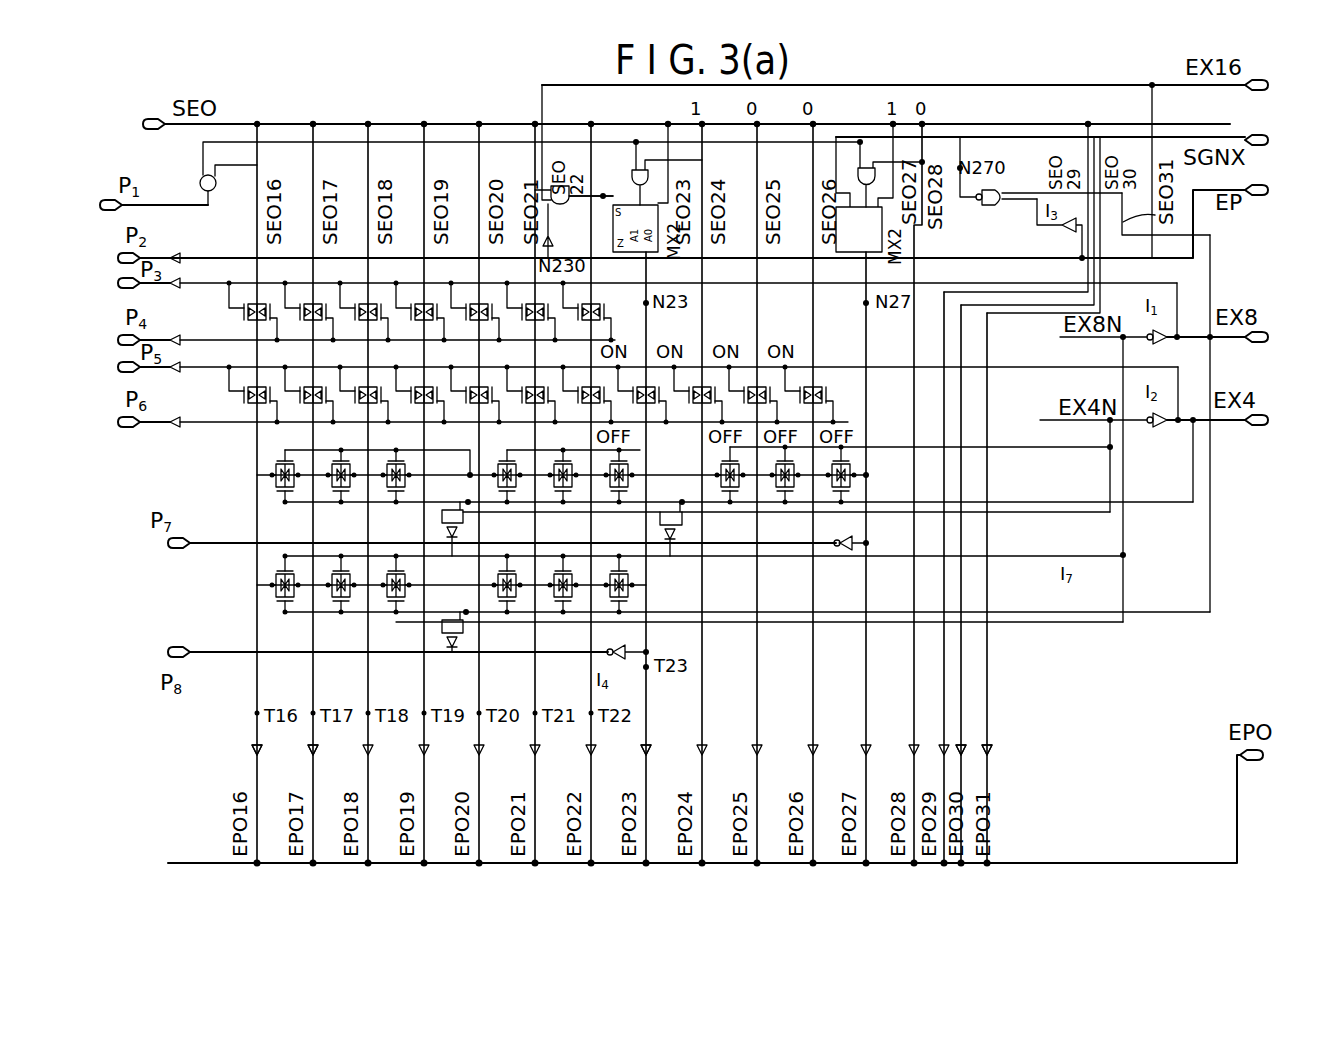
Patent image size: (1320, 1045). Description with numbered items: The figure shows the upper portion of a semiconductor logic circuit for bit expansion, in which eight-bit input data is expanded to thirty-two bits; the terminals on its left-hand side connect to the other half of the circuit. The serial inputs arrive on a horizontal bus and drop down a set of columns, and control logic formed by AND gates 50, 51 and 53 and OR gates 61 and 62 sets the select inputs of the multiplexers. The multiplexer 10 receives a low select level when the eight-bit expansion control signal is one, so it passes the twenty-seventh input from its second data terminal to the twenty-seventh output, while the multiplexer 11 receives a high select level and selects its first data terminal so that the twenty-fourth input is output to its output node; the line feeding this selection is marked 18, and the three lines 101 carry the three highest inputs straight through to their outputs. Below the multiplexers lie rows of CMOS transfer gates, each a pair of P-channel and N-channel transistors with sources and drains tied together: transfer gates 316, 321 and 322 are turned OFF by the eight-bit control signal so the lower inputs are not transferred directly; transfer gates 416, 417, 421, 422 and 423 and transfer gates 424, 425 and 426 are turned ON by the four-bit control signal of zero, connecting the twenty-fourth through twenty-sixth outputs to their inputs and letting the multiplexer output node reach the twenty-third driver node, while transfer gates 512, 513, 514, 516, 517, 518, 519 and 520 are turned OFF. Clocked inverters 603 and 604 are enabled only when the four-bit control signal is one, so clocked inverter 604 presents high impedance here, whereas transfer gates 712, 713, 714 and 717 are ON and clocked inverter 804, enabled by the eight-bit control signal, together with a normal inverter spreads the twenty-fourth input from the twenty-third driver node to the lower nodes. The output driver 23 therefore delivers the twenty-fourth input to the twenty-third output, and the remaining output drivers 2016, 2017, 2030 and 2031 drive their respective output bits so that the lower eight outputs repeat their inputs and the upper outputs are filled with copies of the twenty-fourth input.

The AND gate 53 is at (203, 178).
The AND gate 50 is at (636, 158).
The AND gate 51 is at (858, 158).
The signal lines 101 is at (1030, 204).
The OR gate 61 is at (574, 161).
The inverter 18 is at (543, 228).
The multiplexer 10 is at (836, 233).
The OR gate 62 is at (997, 206).
The multiplexer 11 is at (603, 200).
The CMOS transfer gate 316 is at (244, 316).
The CMOS transfer gate 321 is at (488, 322).
The CMOS transfer gate 322 is at (546, 322).
The CMOS transfer gate 416 is at (244, 399).
The CMOS transfer gate 417 is at (276, 412).
The CMOS transfer gate 421 is at (478, 406).
The CMOS transfer gate 422 is at (534, 406).
The CMOS transfer gate 423 is at (590, 406).
The CMOS transfer gate 424 is at (650, 406).
The CMOS transfer gate 425 is at (704, 385).
The CMOS transfer gate 426 is at (818, 385).
The CMOS transfer gate 512 is at (270, 490).
The CMOS transfer gate 513 is at (326, 490).
The CMOS transfer gate 514 is at (382, 490).
The CMOS transfer gate 516 is at (546, 490).
The CMOS transfer gate 517 is at (602, 490).
The CMOS transfer gate 518 is at (714, 490).
The CMOS transfer gate 519 is at (772, 490).
The CMOS transfer gate 520 is at (840, 495).
The clocked inverter 603 is at (446, 535).
The clocked inverter 604 is at (664, 538).
The CMOS transfer gate 712 is at (270, 600).
The CMOS transfer gate 713 is at (326, 600).
The CMOS transfer gate 714 is at (382, 600).
The CMOS transfer gate 717 is at (612, 612).
The clocked inverter 804 is at (450, 644).
The output driver 2016 is at (255, 758).
The output driver 2017 is at (310, 747).
The output driver 23 is at (648, 748).
The output driver 2030 is at (963, 747).
The output driver 2031 is at (990, 757).